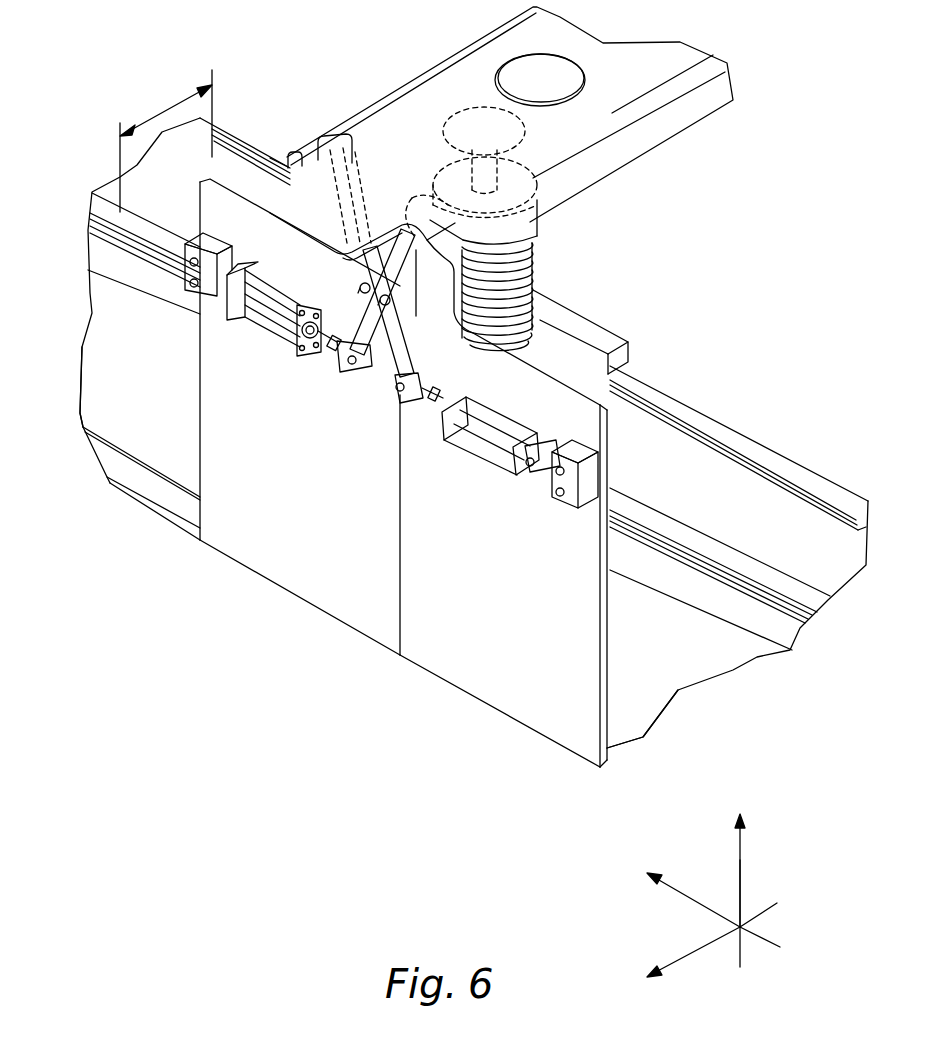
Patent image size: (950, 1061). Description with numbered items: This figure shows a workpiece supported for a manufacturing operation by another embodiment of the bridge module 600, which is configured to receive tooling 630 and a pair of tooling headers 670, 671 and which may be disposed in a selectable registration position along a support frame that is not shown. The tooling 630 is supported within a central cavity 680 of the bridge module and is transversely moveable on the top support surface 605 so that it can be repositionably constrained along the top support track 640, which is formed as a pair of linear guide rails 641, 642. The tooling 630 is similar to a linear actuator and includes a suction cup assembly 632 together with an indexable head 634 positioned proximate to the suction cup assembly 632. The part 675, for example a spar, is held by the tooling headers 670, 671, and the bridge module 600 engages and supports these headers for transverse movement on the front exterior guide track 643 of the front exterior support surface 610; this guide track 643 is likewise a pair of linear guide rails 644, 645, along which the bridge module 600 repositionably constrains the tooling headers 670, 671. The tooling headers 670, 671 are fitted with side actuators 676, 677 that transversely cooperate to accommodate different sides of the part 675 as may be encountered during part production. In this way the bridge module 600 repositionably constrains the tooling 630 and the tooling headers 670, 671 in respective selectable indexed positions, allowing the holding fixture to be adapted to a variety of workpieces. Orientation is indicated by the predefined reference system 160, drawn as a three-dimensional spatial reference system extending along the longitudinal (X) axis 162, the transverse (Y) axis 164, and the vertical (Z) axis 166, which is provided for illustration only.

The bridge module 600 is at (745, 360).
The top support surface 605 is at (837, 593).
The front exterior support surface 610 is at (638, 693).
The tooling 630 is at (532, 313).
The suction cup assembly 632 is at (553, 127).
The indexable head 634 is at (540, 220).
The top support track 640 is at (837, 490).
The linear guide rail 641 is at (780, 462).
The linear guide rail 642 is at (677, 537).
The front exterior guide track 643 is at (92, 325).
The linear guide rail 644 is at (160, 303).
The linear guide rail 645 is at (175, 497).
The tooling header 670 is at (303, 560).
The tooling header 671 is at (503, 673).
The part 675 is at (437, 93).
The side actuator 676 is at (263, 337).
The side actuator 677 is at (488, 467).
The central cavity 680 is at (157, 110).
The predefined reference system 160 is at (727, 861).
The longitudinal (X) axis 162 is at (680, 957).
The transverse (Y) axis 164 is at (697, 897).
The vertical (Z) axis 166 is at (740, 873).